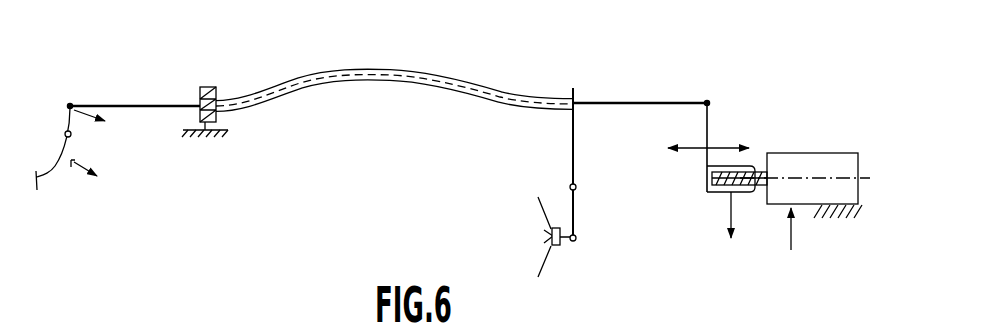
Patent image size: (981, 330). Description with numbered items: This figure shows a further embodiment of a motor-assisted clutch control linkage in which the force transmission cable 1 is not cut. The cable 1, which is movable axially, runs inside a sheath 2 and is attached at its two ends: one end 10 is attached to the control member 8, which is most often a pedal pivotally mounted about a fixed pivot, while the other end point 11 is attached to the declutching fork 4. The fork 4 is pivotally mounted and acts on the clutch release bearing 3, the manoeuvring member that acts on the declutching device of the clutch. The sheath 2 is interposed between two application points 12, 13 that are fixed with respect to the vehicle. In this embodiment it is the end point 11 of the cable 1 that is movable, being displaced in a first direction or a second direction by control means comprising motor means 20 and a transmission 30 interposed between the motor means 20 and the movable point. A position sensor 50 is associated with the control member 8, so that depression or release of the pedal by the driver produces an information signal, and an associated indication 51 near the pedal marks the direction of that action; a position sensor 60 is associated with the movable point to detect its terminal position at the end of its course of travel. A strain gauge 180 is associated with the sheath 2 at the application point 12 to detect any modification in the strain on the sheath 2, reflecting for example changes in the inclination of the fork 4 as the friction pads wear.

The cable 1 is at (150, 103).
The sheath 2 is at (302, 77).
The clutch release bearing 3 is at (556, 246).
The declutching fork 4 is at (581, 116).
The control member 8 is at (62, 175).
The end of the cable 10 is at (70, 104).
The end point of the cable 11 is at (707, 100).
The application point 12 is at (199, 95).
The application point 13 is at (570, 88).
The motor means 20 is at (818, 148).
The transmission 30 is at (700, 174).
The position sensor 50 is at (99, 180).
The first movement direction 51 is at (83, 124).
The position sensor 60 is at (725, 222).
The strain gauge 180 is at (221, 118).